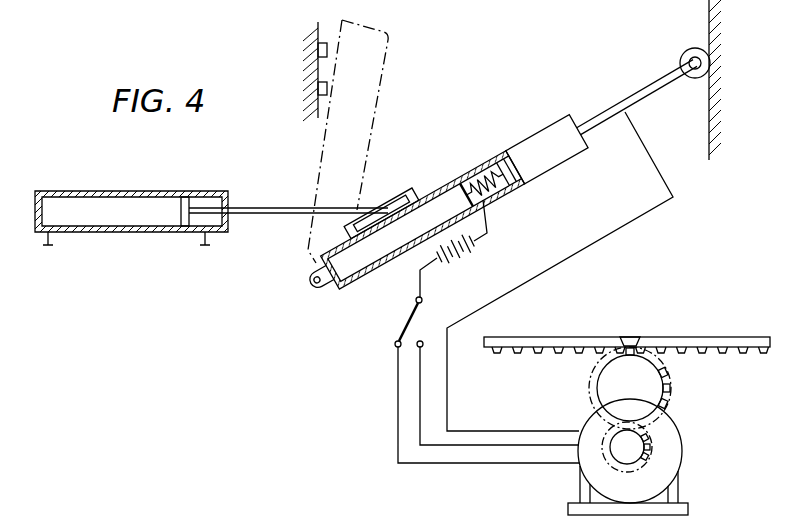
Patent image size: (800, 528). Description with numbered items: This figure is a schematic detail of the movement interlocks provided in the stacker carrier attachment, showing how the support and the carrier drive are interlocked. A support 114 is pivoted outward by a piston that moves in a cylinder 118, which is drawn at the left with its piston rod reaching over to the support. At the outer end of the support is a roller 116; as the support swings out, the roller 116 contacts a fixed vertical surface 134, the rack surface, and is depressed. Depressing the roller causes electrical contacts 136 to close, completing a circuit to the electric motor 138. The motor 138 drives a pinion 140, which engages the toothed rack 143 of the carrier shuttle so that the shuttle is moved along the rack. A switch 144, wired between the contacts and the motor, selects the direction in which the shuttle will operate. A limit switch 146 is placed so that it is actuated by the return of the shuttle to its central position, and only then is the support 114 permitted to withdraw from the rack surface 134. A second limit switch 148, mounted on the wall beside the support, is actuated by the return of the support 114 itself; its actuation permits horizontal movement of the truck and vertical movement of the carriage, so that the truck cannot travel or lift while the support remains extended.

The support 114 is at (437, 187).
The roller 116 is at (697, 48).
The cylinder 118 is at (130, 191).
The fixed vertical surface 134 is at (710, 113).
The electrical contacts 136 is at (490, 205).
The electric motor 138 is at (590, 462).
The pinion 140 is at (667, 397).
The rack 143 is at (707, 352).
The switch 144 is at (416, 301).
The limit switch 146 is at (634, 337).
The limit switch 148 is at (327, 92).